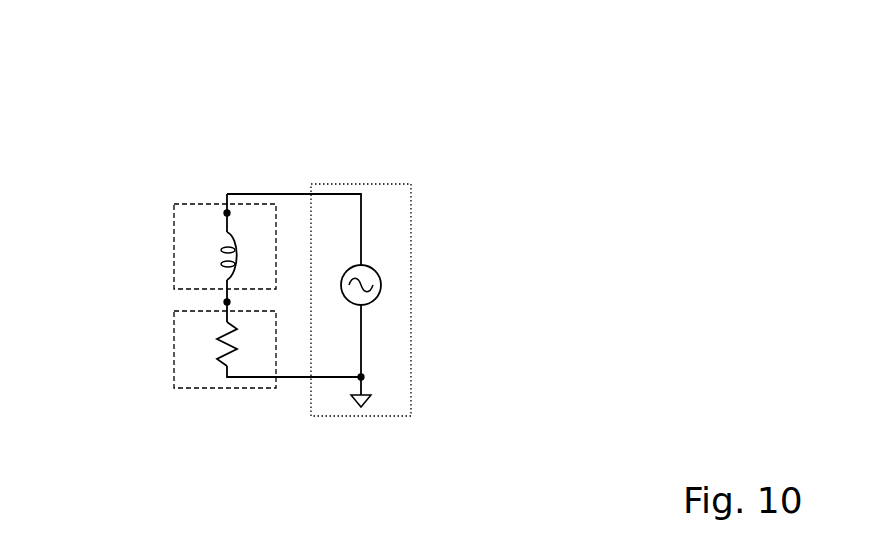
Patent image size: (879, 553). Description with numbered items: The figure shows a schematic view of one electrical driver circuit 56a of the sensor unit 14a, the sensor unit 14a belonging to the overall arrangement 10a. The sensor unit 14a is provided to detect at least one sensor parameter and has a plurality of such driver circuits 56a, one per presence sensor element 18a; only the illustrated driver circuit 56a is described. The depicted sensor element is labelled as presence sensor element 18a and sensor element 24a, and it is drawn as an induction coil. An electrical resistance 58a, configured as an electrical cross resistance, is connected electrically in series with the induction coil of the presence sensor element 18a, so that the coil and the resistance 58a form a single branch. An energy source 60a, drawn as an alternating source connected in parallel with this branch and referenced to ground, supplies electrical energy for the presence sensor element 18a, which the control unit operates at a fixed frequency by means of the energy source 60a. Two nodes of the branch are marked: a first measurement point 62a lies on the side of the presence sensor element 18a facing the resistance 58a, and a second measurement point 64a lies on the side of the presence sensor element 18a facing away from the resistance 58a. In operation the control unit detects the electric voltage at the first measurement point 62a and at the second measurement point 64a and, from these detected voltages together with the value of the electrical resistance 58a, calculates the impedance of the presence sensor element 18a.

The vehicle / system 10a is at (587, 124).
The sensor unit 14a is at (523, 171).
The electrical driver circuit 56a is at (468, 216).
The electrical resistance 58a is at (174, 356).
The energy source 60a is at (411, 313).
The first measurement point 62a is at (227, 302).
The second measurement point 64a is at (227, 213).
The presence sensor element 18a is at (140, 246).
The sensor element 24a is at (221, 269).